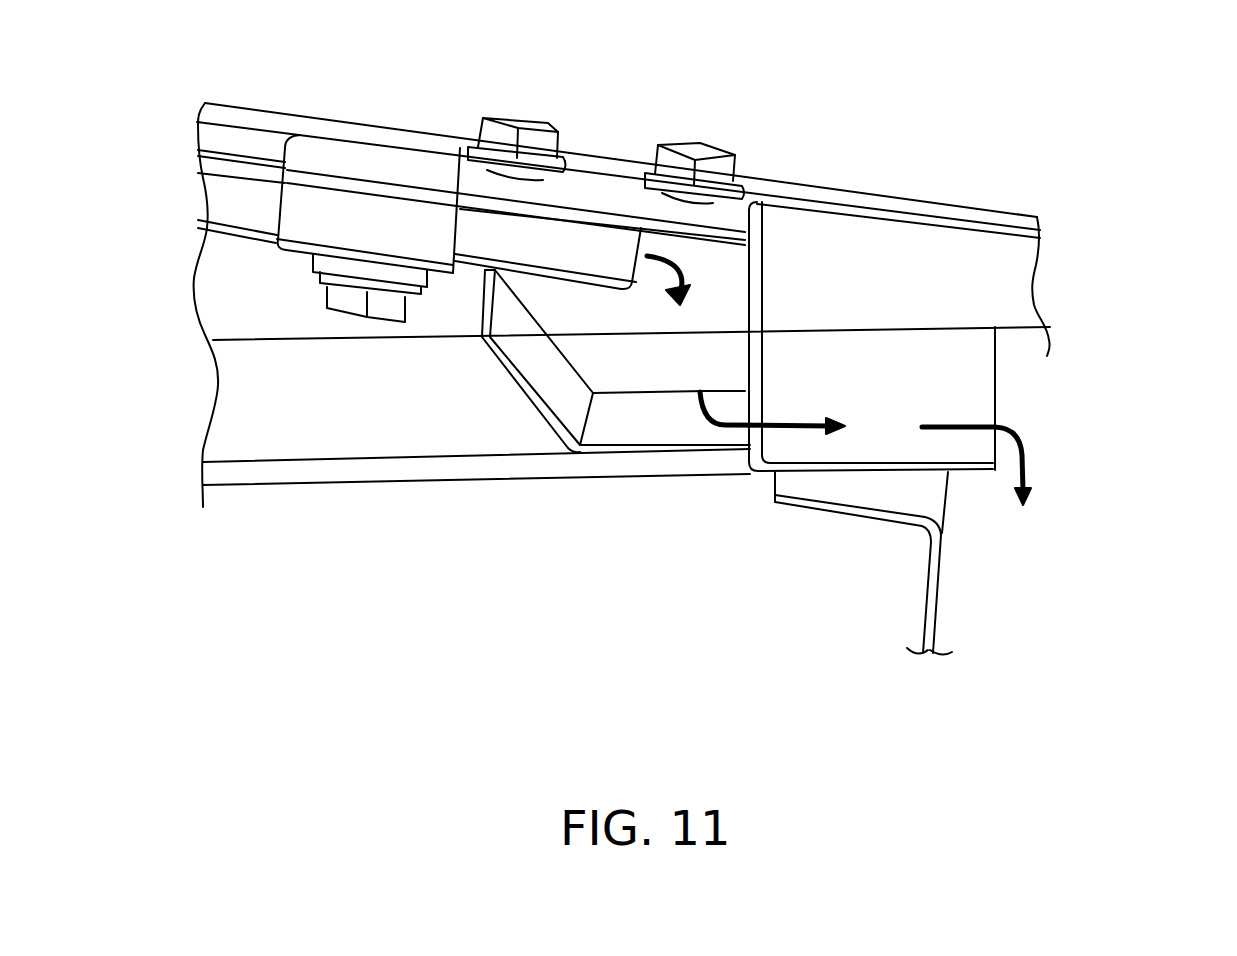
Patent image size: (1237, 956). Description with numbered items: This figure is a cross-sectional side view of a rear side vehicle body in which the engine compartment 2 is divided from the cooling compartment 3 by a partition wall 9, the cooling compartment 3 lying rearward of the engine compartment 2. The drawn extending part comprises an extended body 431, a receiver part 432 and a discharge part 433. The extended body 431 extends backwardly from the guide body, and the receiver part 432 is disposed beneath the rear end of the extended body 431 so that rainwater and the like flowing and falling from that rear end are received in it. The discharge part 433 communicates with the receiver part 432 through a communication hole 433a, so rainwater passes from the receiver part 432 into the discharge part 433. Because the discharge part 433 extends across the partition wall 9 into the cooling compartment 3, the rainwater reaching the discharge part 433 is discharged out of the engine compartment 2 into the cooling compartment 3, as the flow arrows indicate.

The engine compartment 2 is at (380, 560).
The cooling compartment 3 is at (1098, 545).
The partition wall 9 is at (938, 602).
The extended body 431 is at (573, 247).
The receiver part 432 is at (640, 422).
The discharge part 433 is at (943, 390).
The communication hole 433a is at (750, 435).